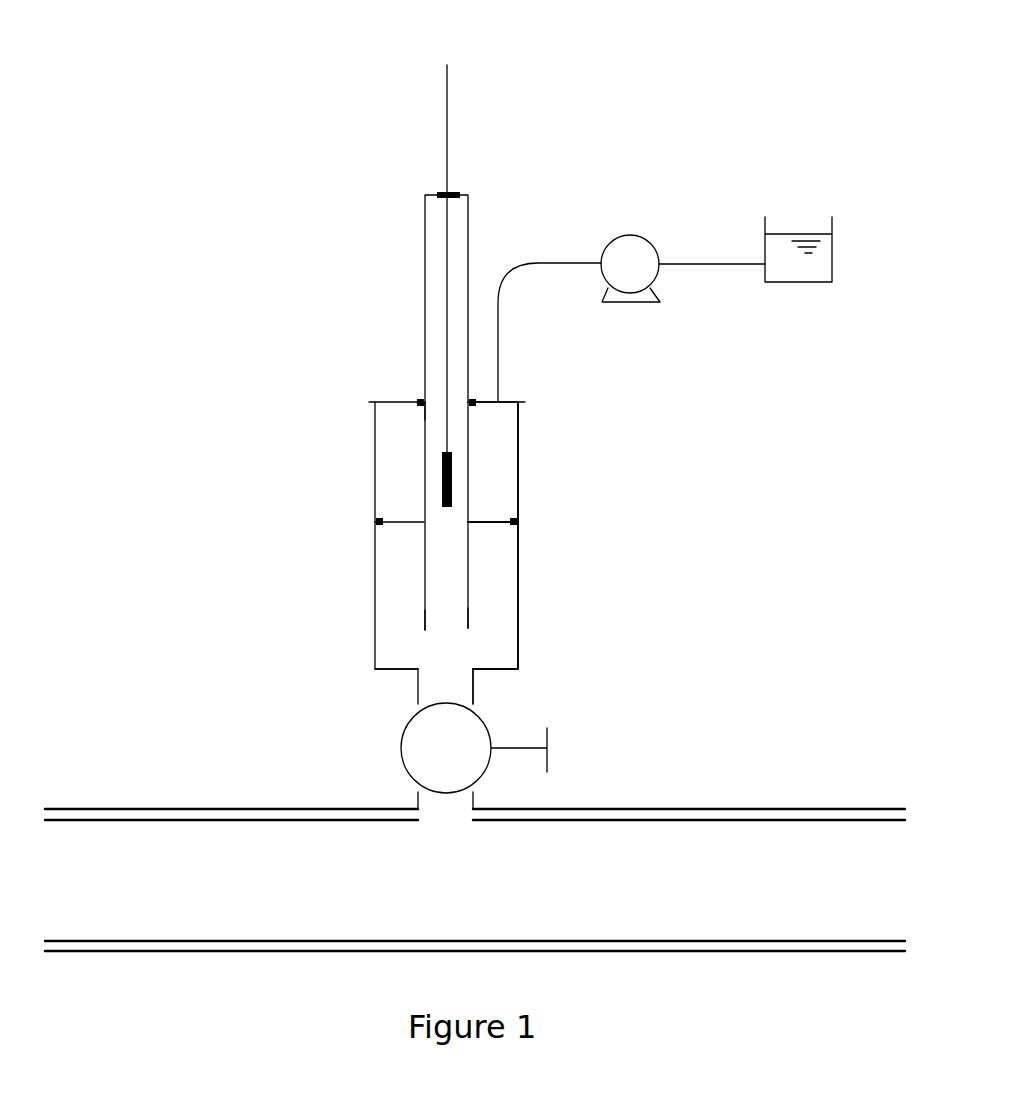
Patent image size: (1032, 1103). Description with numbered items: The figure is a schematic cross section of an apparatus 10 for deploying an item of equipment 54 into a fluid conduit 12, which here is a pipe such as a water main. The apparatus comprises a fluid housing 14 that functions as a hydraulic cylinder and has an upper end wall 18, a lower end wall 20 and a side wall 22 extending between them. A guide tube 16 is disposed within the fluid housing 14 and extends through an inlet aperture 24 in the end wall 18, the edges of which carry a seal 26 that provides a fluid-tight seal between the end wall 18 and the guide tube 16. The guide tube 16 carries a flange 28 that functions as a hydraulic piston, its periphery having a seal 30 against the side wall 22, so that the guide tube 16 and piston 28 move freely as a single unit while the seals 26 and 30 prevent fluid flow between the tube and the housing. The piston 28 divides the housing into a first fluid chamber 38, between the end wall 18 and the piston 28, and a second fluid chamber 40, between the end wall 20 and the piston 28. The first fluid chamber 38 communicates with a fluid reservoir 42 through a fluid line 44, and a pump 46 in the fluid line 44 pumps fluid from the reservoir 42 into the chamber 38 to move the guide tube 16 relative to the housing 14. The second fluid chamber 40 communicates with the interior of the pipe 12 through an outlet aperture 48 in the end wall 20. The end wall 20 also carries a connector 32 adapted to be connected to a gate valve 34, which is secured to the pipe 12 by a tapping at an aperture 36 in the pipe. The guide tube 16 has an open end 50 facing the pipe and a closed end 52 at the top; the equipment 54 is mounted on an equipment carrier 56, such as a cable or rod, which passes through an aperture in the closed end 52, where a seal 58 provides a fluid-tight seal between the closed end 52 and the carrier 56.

The apparatus 10 is at (163, 476).
The fluid conduit 12 is at (763, 809).
The fluid housing 14 is at (376, 643).
The guide tube 16 is at (468, 593).
The end wall 18 is at (388, 400).
The end wall 20 is at (405, 670).
The side wall 22 is at (518, 543).
The inlet aperture 24 is at (433, 407).
The seal 26 is at (420, 401).
The flange 28 is at (405, 522).
The seal 30 is at (378, 521).
The connector 32 is at (476, 689).
The gate valve 34 is at (422, 744).
The aperture 36 is at (470, 812).
The first fluid chamber 38 is at (494, 441).
The second fluid chamber 40 is at (498, 617).
The fluid reservoir 42 is at (778, 252).
The fluid line 44 is at (556, 262).
The pump 46 is at (637, 254).
The outlet aperture 48 is at (440, 677).
The open end 50 is at (447, 635).
The closed end 52 is at (461, 193).
The equipment 54 is at (452, 477).
The equipment carrier 56 is at (445, 137).
The seal 58 is at (437, 193).